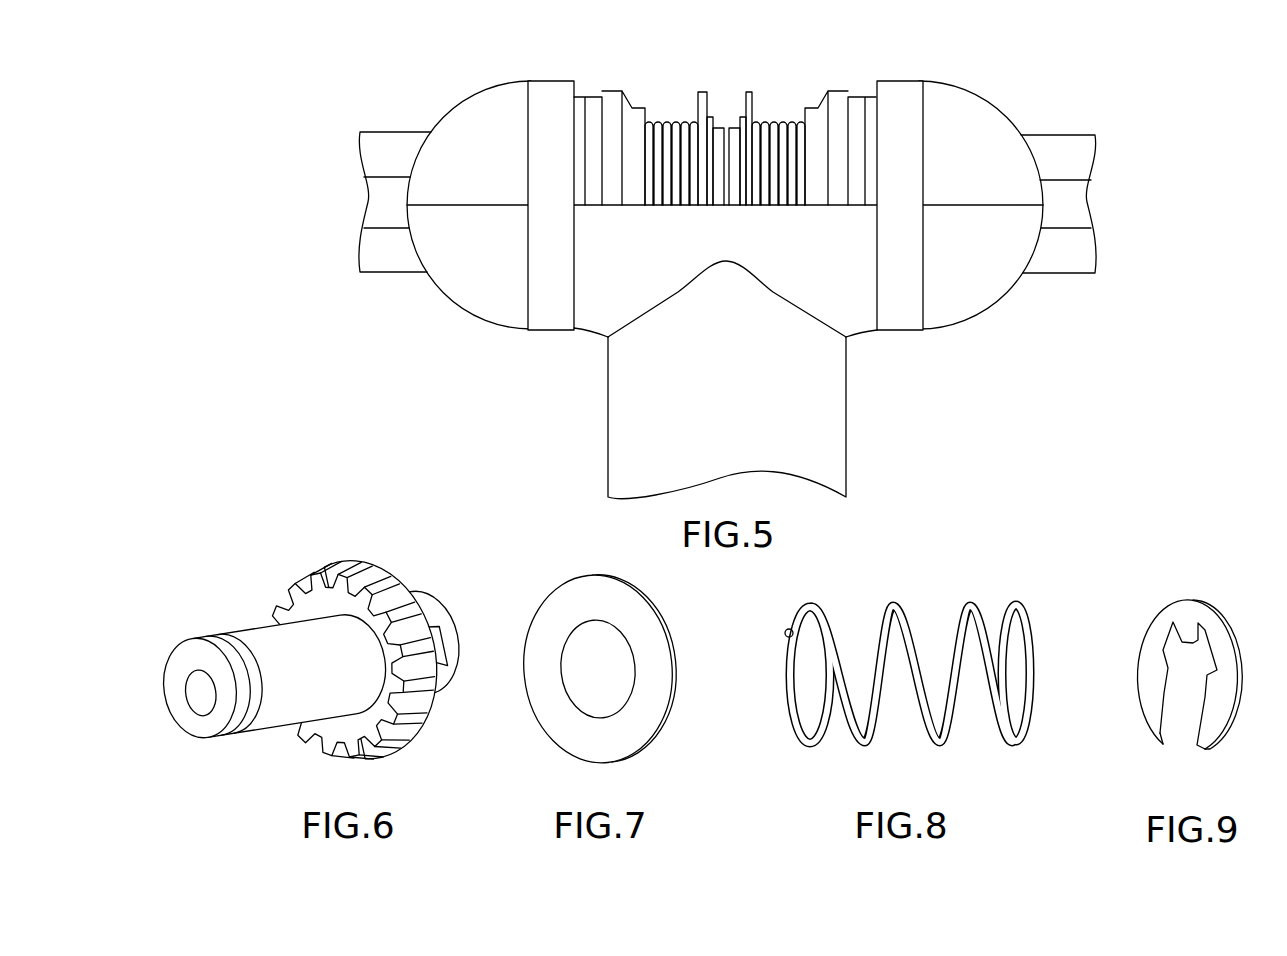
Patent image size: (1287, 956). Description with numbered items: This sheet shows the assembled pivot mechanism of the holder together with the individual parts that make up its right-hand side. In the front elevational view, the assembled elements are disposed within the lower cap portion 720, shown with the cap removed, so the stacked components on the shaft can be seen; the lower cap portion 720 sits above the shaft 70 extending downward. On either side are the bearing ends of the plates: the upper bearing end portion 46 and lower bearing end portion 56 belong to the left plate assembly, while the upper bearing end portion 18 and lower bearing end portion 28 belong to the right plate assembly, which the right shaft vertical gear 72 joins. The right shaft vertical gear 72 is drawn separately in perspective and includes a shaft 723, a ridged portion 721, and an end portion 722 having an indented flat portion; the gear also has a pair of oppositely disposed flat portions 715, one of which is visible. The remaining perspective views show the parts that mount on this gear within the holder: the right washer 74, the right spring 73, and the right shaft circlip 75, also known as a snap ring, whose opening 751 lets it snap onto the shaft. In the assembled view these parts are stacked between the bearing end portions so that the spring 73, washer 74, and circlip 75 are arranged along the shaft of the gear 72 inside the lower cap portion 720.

In FIG. 5, the upper bearing end portion 18 is at (953, 98).
In FIG. 5, the lower bearing end portion 28 is at (953, 315).
In FIG. 5, the upper bearing end portion 46 is at (483, 96).
In FIG. 5, the lower bearing end portion 56 is at (483, 313).
In FIG. 5, the shaft 70 is at (840, 430).
In FIG. 5, the right shaft vertical gear 72 is at (733, 127).
In FIG. 6, the right shaft vertical gear 72 is at (216, 663).
In FIG. 5, the right spring 73 is at (782, 123).
In FIG. 8, the right spring 73 is at (783, 688).
In FIG. 5, the right washer 74 is at (752, 93).
In FIG. 7, the right washer 74 is at (672, 650).
In FIG. 5, the right shaft circlip 75 is at (743, 122).
In FIG. 9, the right shaft circlip 75 is at (1193, 595).
In FIG. 6, the flat portions 715 is at (432, 667).
In FIG. 5, the lower cap portion 720 is at (607, 300).
In FIG. 6, the ridged portion 721 is at (333, 593).
In FIG. 6, the end portion 722 is at (428, 627).
In FIG. 6, the shaft 723 is at (217, 640).
In FIG. 9, the opening 751 is at (1190, 685).